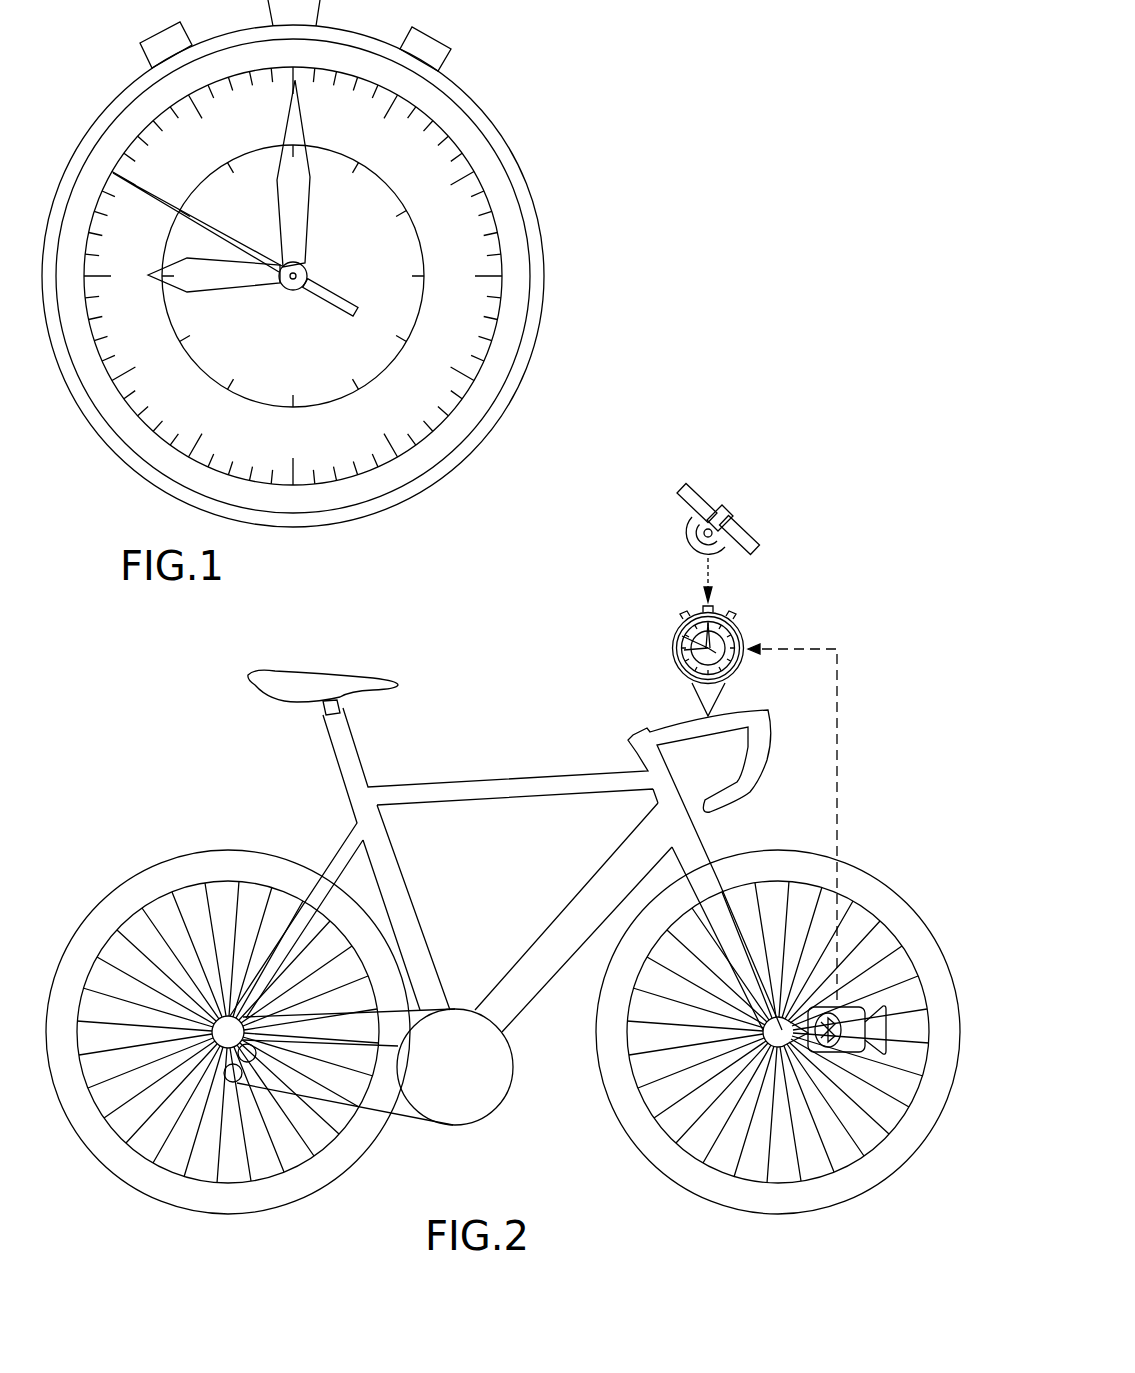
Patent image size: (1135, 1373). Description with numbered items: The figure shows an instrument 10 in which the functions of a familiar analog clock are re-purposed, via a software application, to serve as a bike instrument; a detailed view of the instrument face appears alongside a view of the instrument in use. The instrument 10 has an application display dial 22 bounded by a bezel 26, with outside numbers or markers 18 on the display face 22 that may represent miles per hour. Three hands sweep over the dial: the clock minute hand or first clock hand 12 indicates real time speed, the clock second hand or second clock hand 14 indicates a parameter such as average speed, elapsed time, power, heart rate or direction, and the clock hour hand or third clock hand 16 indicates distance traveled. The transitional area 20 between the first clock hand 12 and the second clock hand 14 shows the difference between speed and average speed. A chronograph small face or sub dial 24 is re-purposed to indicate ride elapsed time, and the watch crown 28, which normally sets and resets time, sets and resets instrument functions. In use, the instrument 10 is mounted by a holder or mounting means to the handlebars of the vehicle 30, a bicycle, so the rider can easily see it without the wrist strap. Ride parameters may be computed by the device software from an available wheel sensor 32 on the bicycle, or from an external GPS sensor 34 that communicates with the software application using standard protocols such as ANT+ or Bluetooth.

In FIG. 1, the instrument 10 is at (535, 58).
In FIG. 2, the instrument 10 is at (648, 630).
In FIG. 1, the first clock hand 12 is at (303, 168).
In FIG. 1, the second clock hand 14 is at (198, 222).
In FIG. 1, the third clock hand 16 is at (205, 288).
In FIG. 1, the markers 18 is at (490, 276).
In FIG. 1, the transitional area 20 is at (220, 188).
In FIG. 1, the application display dial 22 is at (450, 230).
In FIG. 1, the sub dial 24 is at (363, 217).
In FIG. 1, the bezel 26 is at (345, 60).
In FIG. 1, the watch crown 28 is at (168, 34).
In FIG. 2, the vehicle 30 is at (543, 777).
In FIG. 2, the wheel sensor 32 is at (877, 1000).
In FIG. 2, the GPS sensor 34 is at (745, 540).